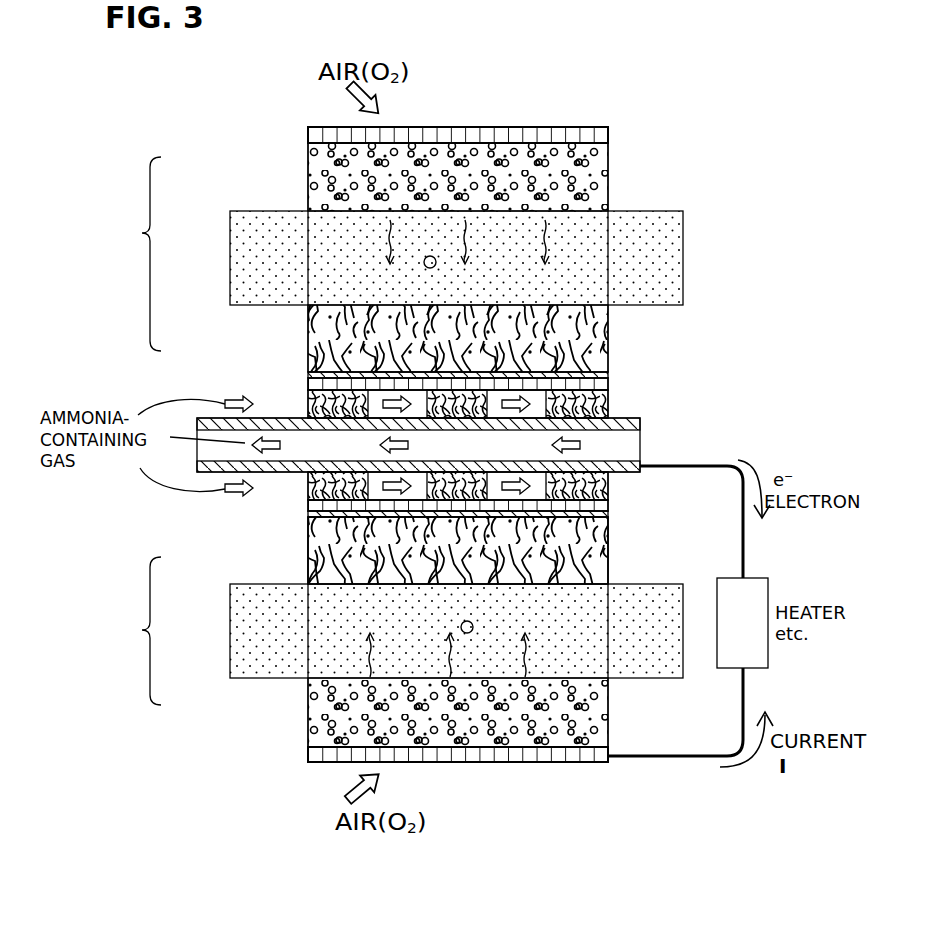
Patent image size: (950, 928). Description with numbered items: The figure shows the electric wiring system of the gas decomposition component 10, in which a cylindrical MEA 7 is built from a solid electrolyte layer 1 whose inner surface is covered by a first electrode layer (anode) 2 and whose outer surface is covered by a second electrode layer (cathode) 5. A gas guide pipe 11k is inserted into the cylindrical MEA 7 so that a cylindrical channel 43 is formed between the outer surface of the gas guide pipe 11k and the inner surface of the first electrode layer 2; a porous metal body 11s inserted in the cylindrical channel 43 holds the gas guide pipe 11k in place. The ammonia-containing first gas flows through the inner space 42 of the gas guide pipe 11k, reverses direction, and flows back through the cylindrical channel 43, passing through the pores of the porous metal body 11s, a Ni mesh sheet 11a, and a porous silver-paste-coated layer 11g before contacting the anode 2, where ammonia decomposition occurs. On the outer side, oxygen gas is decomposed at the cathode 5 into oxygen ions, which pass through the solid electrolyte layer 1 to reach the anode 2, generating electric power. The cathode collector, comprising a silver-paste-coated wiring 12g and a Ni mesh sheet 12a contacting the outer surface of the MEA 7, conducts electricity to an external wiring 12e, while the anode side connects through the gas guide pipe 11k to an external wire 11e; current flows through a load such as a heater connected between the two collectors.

The gas decomposition component 10 is at (480, 918).
The solid electrolyte layer 1 is at (230, 256).
The first electrode layer (anode) 2 is at (307, 345).
The second electrode layer (cathode) 5 is at (307, 172).
The cylindrical MEA 7 is at (324, 445).
The Ni mesh sheet 11a is at (307, 383).
The silver-paste-coated layer 11g is at (608, 377).
The porous metal body 11s is at (608, 408).
The gas guide pipe 11k is at (632, 472).
The external wire 11e is at (693, 466).
The silver-paste-coated wiring 12g is at (502, 128).
The Ni mesh sheet 12a is at (608, 133).
The external wiring 12e is at (652, 762).
The inner space 42 is at (302, 445).
The cylindrical channel 43 is at (318, 533).